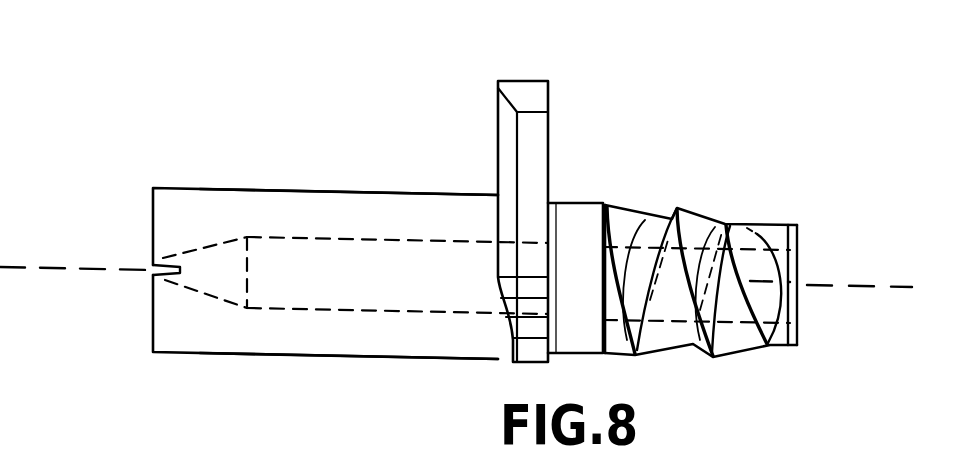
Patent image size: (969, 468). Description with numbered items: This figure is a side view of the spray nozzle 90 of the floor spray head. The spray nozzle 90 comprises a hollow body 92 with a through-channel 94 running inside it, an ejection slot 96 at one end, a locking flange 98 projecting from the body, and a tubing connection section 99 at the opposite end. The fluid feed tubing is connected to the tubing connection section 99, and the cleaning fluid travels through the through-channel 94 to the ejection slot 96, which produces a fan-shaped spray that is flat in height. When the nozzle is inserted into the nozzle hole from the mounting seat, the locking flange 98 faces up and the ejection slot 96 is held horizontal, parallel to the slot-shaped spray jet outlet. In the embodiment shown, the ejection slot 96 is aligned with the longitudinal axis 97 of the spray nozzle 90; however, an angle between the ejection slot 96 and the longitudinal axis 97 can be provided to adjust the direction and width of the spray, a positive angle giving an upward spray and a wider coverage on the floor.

The spray nozzle 90 is at (390, 157).
The hollow body 92 is at (359, 330).
The through-channel 94 is at (271, 288).
The ejection slot 96 is at (152, 273).
The longitudinal axis 97 is at (56, 268).
The locking flange 98 is at (532, 150).
The tubing connection section 99 is at (703, 217).